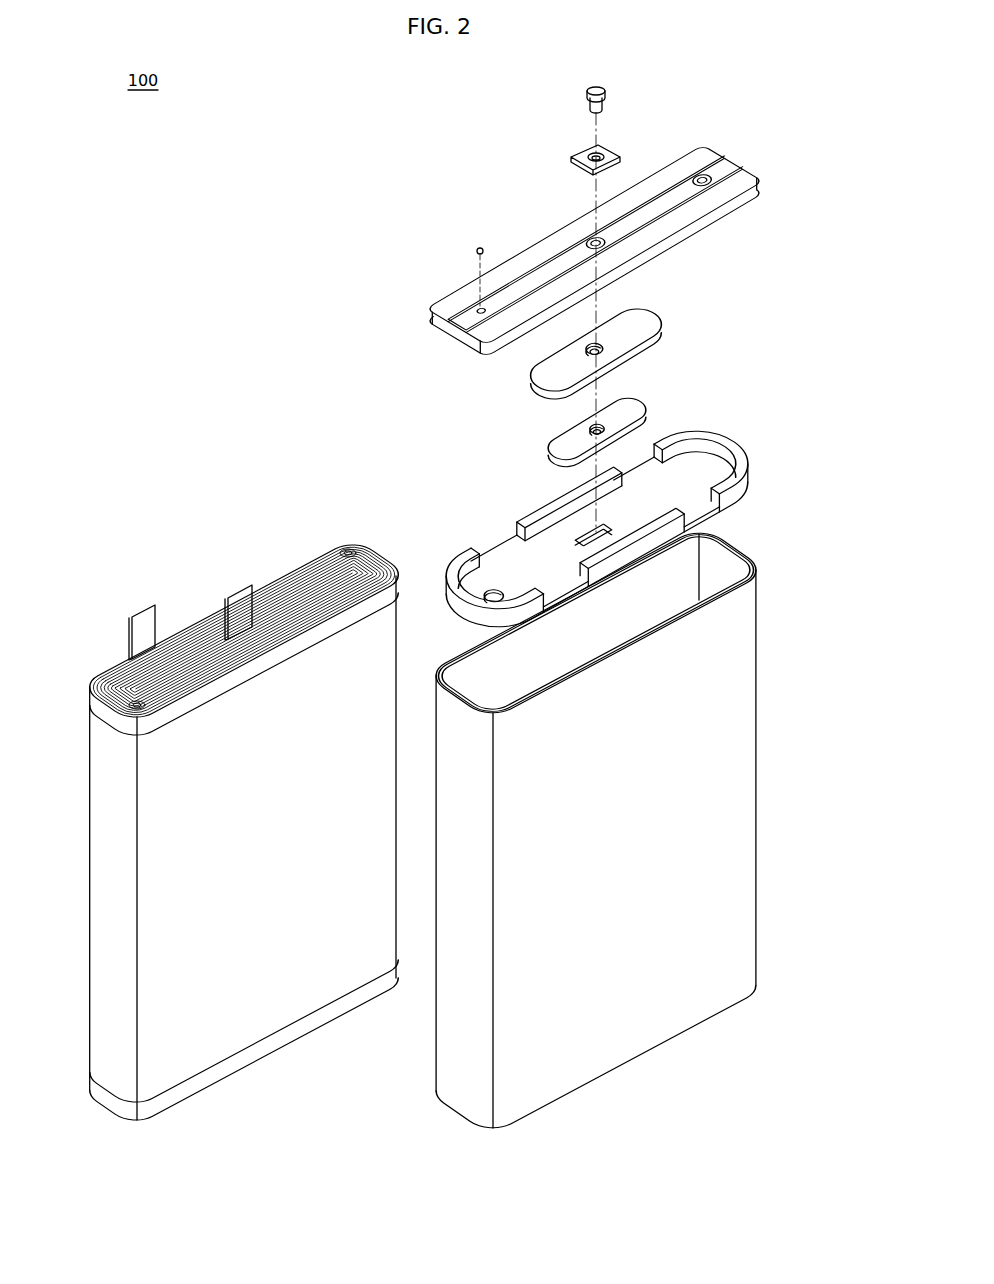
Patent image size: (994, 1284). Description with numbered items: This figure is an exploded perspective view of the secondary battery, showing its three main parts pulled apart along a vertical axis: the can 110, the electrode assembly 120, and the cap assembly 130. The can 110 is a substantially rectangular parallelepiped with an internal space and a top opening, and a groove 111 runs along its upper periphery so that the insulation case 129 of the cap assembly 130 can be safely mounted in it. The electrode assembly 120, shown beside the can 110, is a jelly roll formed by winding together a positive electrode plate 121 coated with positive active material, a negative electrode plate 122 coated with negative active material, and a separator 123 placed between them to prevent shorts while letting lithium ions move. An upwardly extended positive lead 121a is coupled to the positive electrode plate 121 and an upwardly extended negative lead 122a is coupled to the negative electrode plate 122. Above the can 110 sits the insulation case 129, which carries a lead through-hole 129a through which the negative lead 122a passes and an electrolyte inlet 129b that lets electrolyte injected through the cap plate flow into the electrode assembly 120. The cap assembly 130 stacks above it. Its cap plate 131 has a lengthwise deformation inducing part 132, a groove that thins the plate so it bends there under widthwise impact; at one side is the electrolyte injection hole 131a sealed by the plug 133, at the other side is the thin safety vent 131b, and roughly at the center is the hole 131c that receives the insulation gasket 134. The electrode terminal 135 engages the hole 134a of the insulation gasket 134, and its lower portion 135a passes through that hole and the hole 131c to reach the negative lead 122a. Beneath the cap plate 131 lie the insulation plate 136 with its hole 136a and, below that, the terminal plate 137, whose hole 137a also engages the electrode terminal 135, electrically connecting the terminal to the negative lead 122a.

The can 110 is at (626, 822).
The groove 111 is at (734, 542).
The electrode assembly 120 is at (229, 816).
The positive electrode plate 121 is at (291, 563).
The positive lead 121a is at (147, 615).
The negative electrode plate 122 is at (333, 542).
The negative lead 122a is at (241, 597).
The separator 123 is at (314, 552).
The insulation case 129 is at (596, 518).
The lead through-hole 129a is at (584, 530).
The electrolyte inlet 129b is at (499, 582).
The cap assembly 130 is at (760, 84).
The cap plate 131 is at (572, 237).
The electrolyte injection hole 131a is at (481, 310).
The safety vent 131b is at (702, 180).
The hole 131c is at (596, 243).
The deformation inducing part 132 is at (448, 310).
The plug 133 is at (479, 248).
The insulation gasket 134 is at (571, 146).
The hole 134a is at (590, 152).
The electrode terminal 135 is at (627, 82).
The lower portion 135a is at (606, 107).
The insulation plate 136 is at (612, 350).
The upper gasket hole 136a is at (605, 344).
The terminal plate 137 is at (574, 432).
The hole 137a is at (590, 425).